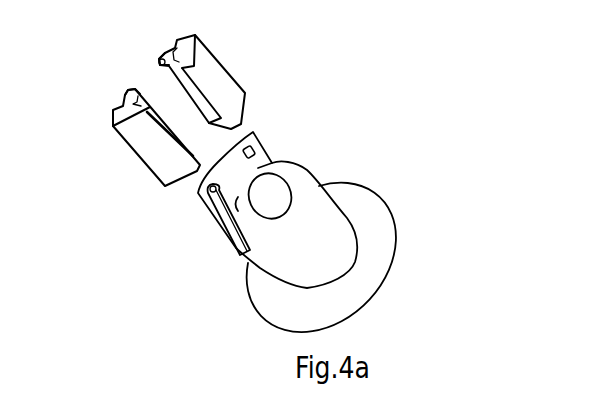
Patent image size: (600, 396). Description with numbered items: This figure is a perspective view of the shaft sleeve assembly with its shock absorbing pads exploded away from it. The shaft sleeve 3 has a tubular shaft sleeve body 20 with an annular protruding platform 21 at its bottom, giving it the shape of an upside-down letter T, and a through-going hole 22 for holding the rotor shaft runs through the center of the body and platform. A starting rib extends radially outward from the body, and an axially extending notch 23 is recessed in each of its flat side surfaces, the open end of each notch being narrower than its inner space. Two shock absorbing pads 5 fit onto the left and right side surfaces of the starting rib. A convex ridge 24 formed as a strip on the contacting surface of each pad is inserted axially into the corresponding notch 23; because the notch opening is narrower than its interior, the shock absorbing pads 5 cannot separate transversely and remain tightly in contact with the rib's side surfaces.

The shaft sleeve 3 is at (273, 242).
The shock absorbing pads 5 is at (240, 63).
The shaft sleeve body 20 is at (318, 227).
The protruding platform 21 is at (372, 248).
The through-going hole 22 is at (262, 209).
The notch 23 is at (254, 148).
The convex ridge 24 is at (160, 60).